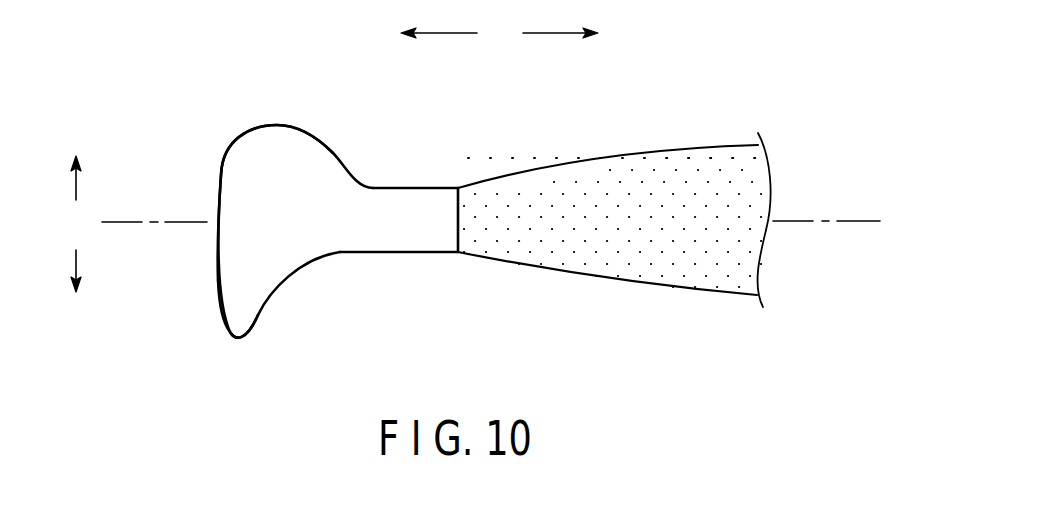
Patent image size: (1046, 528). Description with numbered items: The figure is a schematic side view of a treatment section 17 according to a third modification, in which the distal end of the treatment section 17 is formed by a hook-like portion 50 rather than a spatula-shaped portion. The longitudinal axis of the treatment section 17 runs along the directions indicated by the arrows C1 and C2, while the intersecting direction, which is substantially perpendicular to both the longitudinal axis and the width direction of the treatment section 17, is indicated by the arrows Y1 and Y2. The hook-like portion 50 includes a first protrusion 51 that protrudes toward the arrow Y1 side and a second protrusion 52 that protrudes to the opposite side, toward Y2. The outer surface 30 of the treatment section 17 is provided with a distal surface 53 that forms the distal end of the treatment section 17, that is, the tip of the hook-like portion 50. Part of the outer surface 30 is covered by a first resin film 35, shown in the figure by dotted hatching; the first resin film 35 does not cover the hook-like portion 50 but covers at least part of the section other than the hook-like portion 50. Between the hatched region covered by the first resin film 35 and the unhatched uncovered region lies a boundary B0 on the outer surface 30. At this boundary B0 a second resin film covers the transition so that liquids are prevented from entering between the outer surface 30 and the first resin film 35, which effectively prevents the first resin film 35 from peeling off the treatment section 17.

The treatment section 17 is at (642, 116).
The first resin film 35 is at (657, 270).
The outer surface 30 is at (413, 230).
The hook-like portion 50 is at (295, 230).
The first protrusion 51 is at (242, 330).
The second protrusion 52 is at (276, 135).
The distal surface 53 is at (222, 167).
The boundary B0 is at (457, 207).
The longitudinal axis direction C1 is at (439, 21).
The longitudinal axis direction C2 is at (560, 21).
The intersecting direction Y1 is at (59, 271).
The intersecting direction Y2 is at (59, 178).